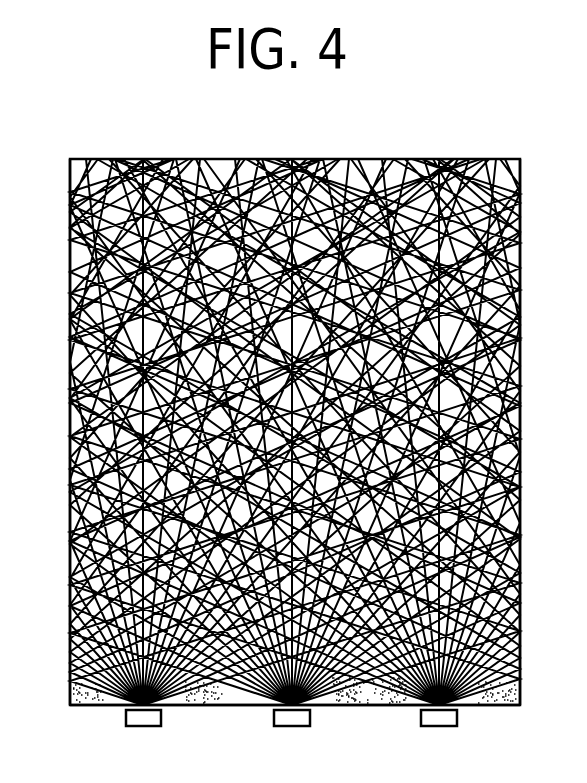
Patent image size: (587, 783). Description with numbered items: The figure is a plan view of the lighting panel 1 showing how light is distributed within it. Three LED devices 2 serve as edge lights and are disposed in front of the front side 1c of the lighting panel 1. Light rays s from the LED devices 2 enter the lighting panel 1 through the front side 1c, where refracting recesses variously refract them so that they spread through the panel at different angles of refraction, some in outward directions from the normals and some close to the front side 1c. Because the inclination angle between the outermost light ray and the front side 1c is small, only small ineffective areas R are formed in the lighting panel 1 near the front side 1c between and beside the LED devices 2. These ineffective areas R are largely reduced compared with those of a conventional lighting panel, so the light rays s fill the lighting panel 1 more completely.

The lighting panel 1 is at (143, 151).
The front side 1c is at (79, 697).
The LED device 2 is at (118, 708).
The ineffective area R is at (213, 697).
The light rays s is at (62, 482).